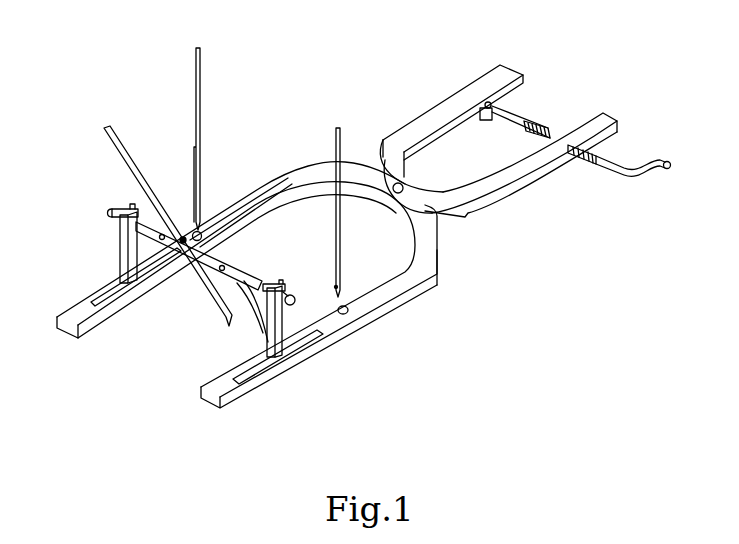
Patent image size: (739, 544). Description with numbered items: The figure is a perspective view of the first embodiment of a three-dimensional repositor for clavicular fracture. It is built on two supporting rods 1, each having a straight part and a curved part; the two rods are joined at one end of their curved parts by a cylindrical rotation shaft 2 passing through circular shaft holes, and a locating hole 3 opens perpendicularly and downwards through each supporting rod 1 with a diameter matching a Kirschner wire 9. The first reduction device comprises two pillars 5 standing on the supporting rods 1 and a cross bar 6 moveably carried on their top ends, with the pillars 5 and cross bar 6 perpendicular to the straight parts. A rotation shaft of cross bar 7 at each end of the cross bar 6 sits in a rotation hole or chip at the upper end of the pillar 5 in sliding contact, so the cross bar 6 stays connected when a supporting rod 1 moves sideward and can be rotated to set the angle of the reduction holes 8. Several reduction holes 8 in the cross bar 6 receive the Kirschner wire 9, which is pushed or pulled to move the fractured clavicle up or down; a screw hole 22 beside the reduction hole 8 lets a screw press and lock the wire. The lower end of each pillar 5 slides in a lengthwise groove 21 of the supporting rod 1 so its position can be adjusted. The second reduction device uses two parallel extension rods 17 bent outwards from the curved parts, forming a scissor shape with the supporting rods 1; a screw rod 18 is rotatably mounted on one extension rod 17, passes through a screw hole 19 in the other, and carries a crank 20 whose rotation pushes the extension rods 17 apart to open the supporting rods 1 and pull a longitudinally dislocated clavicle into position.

The supporting rod 1 is at (258, 188).
The rotation shaft 2 is at (390, 175).
The locating hole 3 is at (350, 312).
The pillar 5 is at (120, 250).
The cross bar 6 is at (236, 286).
The rotation shaft of cross bar 7 is at (292, 302).
The reduction hole 8 is at (270, 350).
The Kirschner wire 9 is at (132, 178).
The extension rod 17 is at (432, 118).
The screw rod 18 is at (523, 120).
The screw hole 19 is at (600, 148).
The crank 20 is at (652, 157).
The groove 21 is at (92, 298).
The screw hole 22 is at (182, 230).